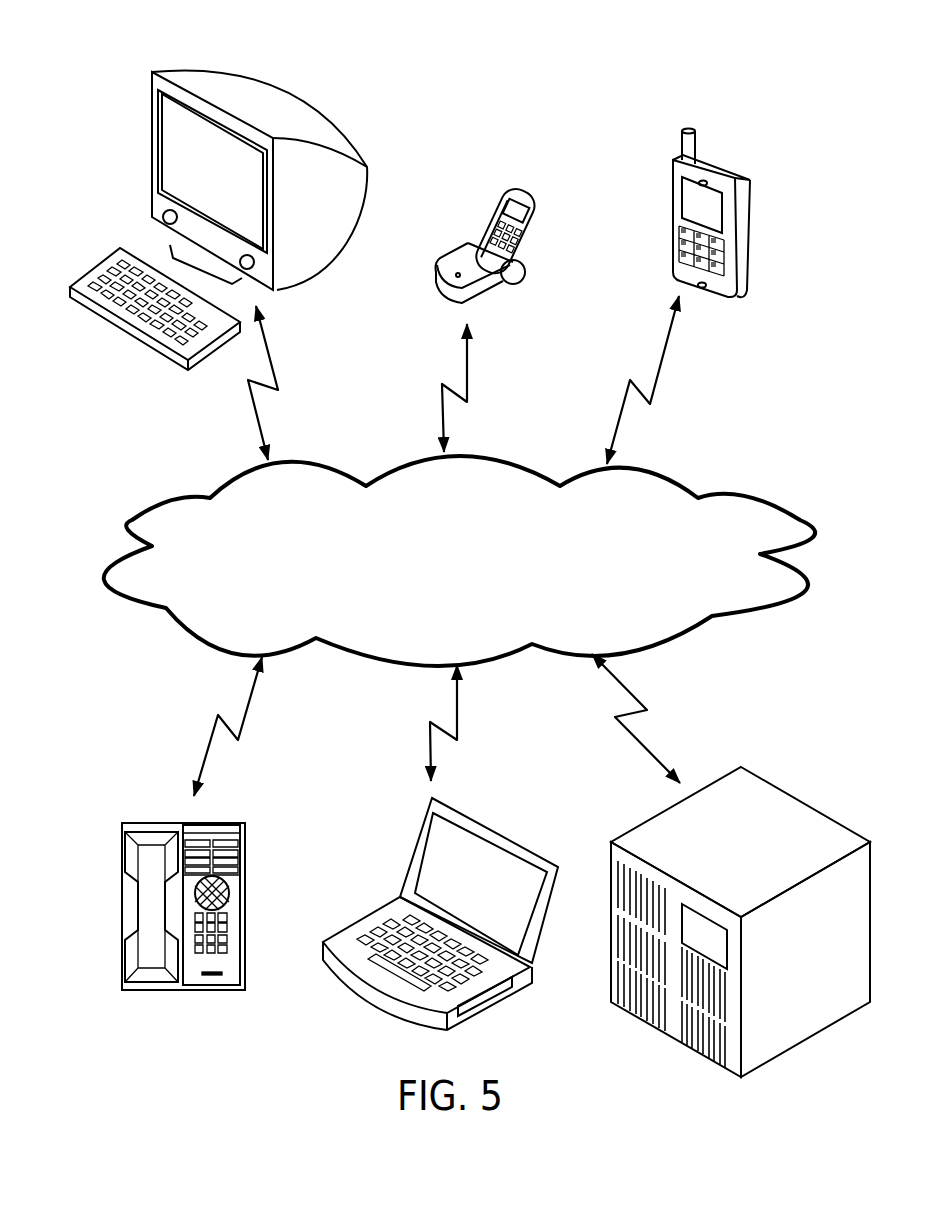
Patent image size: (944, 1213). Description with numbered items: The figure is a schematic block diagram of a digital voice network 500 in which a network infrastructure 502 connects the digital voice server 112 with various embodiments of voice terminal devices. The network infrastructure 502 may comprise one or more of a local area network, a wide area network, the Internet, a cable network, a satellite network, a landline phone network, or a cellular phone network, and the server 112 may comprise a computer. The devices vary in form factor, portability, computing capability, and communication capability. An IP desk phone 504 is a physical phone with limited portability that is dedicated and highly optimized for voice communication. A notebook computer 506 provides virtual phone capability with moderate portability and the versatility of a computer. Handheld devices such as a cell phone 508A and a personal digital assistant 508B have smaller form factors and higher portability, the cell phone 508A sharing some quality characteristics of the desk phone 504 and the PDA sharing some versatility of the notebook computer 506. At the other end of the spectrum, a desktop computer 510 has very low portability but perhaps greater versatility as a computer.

The digital voice network 500 is at (750, 76).
The network infrastructure 502 is at (459, 561).
The IP desk phone 504 is at (235, 897).
The notebook computer 506 is at (498, 832).
The cell phone 508A is at (545, 210).
The personal digital assistant 508B is at (707, 173).
The desktop computer 510 is at (358, 195).
The digital voice server 112 is at (740, 922).